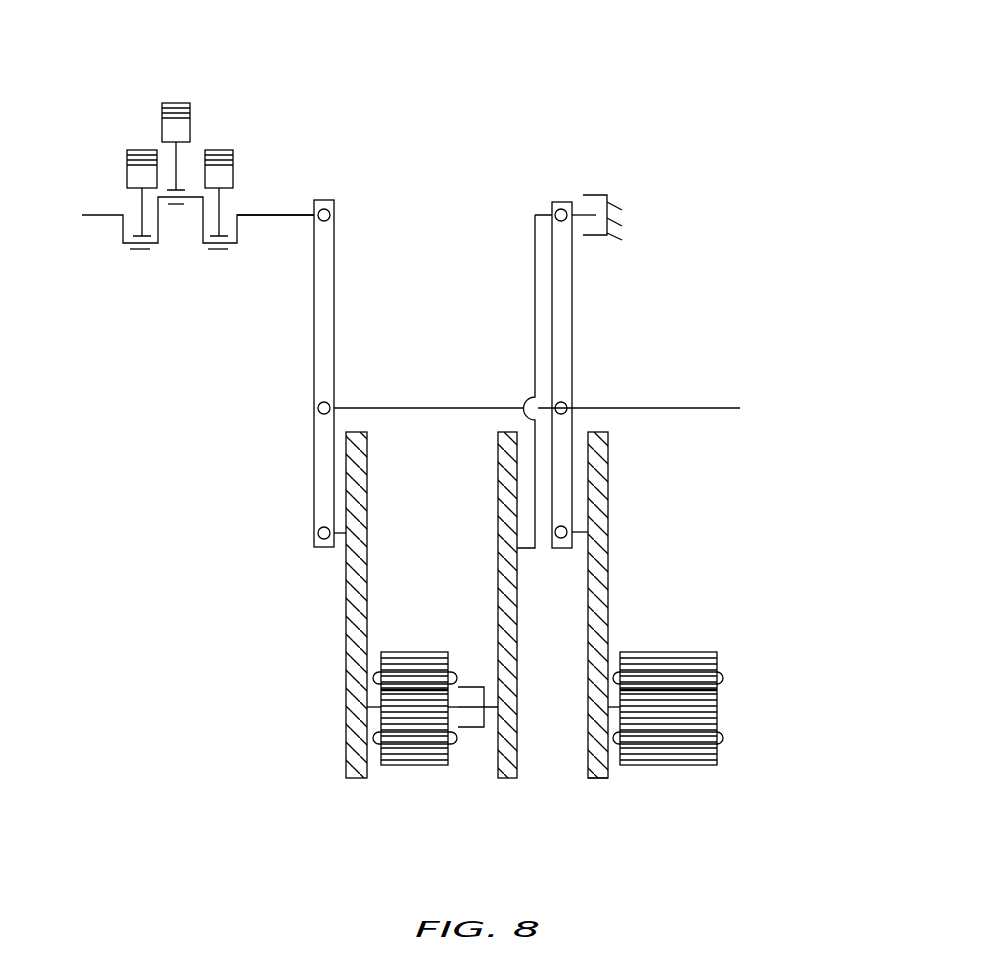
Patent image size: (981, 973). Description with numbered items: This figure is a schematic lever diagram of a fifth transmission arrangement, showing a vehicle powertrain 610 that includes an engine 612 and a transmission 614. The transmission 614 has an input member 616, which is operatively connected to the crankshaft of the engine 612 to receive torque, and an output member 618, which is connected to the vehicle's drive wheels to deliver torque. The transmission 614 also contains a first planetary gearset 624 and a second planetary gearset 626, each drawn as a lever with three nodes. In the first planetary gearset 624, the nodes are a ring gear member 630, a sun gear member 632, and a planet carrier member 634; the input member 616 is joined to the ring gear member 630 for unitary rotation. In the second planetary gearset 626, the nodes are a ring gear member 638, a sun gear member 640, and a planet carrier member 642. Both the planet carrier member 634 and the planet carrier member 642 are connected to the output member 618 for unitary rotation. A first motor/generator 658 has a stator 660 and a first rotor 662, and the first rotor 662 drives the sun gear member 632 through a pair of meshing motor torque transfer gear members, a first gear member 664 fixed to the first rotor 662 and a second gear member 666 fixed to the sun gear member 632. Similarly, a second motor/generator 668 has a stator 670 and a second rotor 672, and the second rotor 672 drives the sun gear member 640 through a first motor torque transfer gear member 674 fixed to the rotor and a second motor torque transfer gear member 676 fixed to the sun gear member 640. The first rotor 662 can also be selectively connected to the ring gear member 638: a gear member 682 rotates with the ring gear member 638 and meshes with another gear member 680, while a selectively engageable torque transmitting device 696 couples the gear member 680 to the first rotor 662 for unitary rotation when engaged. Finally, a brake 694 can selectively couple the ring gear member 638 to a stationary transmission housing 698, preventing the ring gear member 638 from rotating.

The vehicle powertrain 610 is at (494, 48).
The engine 612 is at (127, 165).
The transmission 614 is at (399, 110).
The input member 616 is at (278, 215).
The output member 618 is at (662, 408).
The first planetary gearset 624 is at (314, 308).
The second planetary gearset 626 is at (572, 313).
The ring gear member 630 is at (332, 214).
The sun gear member 632 is at (316, 538).
The planet carrier member 634 is at (316, 408).
The ring gear member 638 is at (553, 211).
The sun gear member 640 is at (562, 552).
The planet carrier member 642 is at (565, 404).
The first motor/generator 658 is at (376, 709).
The stator 660 is at (415, 767).
The first rotor 662 is at (375, 706).
The first motor torque transfer gear member 664 is at (347, 713).
The second motor torque transfer gear member 666 is at (367, 498).
The second motor/generator 668 is at (710, 694).
The stator 670 is at (718, 660).
The second rotor 672 is at (615, 705).
The first motor torque transfer gear member 674 is at (600, 778).
The second motor torque transfer gear member 676 is at (608, 527).
The gear member 680 is at (505, 778).
The gear member 682 is at (498, 527).
The brake 694 is at (630, 173).
The torque transmitting device 696 is at (475, 745).
The transmission housing 698 is at (617, 205).